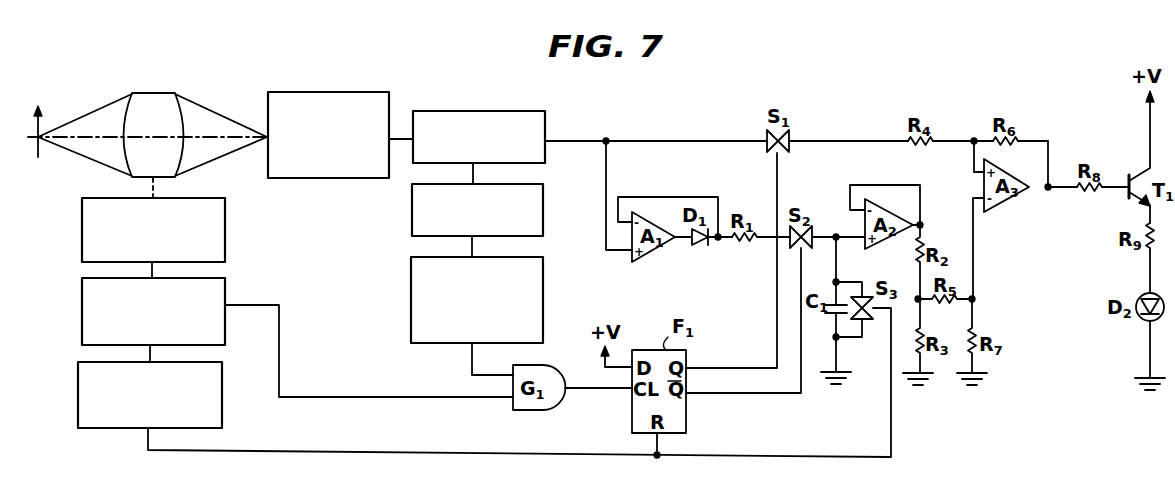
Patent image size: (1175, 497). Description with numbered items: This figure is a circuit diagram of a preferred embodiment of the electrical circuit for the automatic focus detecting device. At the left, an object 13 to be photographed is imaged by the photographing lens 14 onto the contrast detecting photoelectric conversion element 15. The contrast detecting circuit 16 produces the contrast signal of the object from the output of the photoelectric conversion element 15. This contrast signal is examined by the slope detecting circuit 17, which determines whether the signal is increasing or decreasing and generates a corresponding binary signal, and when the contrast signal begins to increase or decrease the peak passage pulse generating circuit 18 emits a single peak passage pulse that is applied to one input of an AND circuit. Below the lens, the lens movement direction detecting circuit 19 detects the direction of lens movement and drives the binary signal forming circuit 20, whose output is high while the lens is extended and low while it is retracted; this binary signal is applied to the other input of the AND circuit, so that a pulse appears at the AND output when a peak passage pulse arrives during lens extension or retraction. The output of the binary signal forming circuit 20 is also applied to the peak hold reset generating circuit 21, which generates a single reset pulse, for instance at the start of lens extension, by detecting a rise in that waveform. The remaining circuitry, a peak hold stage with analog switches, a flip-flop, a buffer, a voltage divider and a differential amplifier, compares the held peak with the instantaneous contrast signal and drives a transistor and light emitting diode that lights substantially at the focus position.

The object / focal point with arrow 13 is at (43, 122).
The photographing lens 14 is at (163, 106).
The photoelectric conversion element 15 is at (383, 100).
The contrast detecting circuit 16 is at (545, 118).
The slope detecting circuit 17 is at (543, 192).
The peak passage pulse generating circuit 18 is at (543, 282).
The lens movement direction detecting circuit 19 is at (225, 210).
The binary signal forming circuit 20 is at (215, 295).
The peak hold reset generating circuit 21 is at (213, 380).